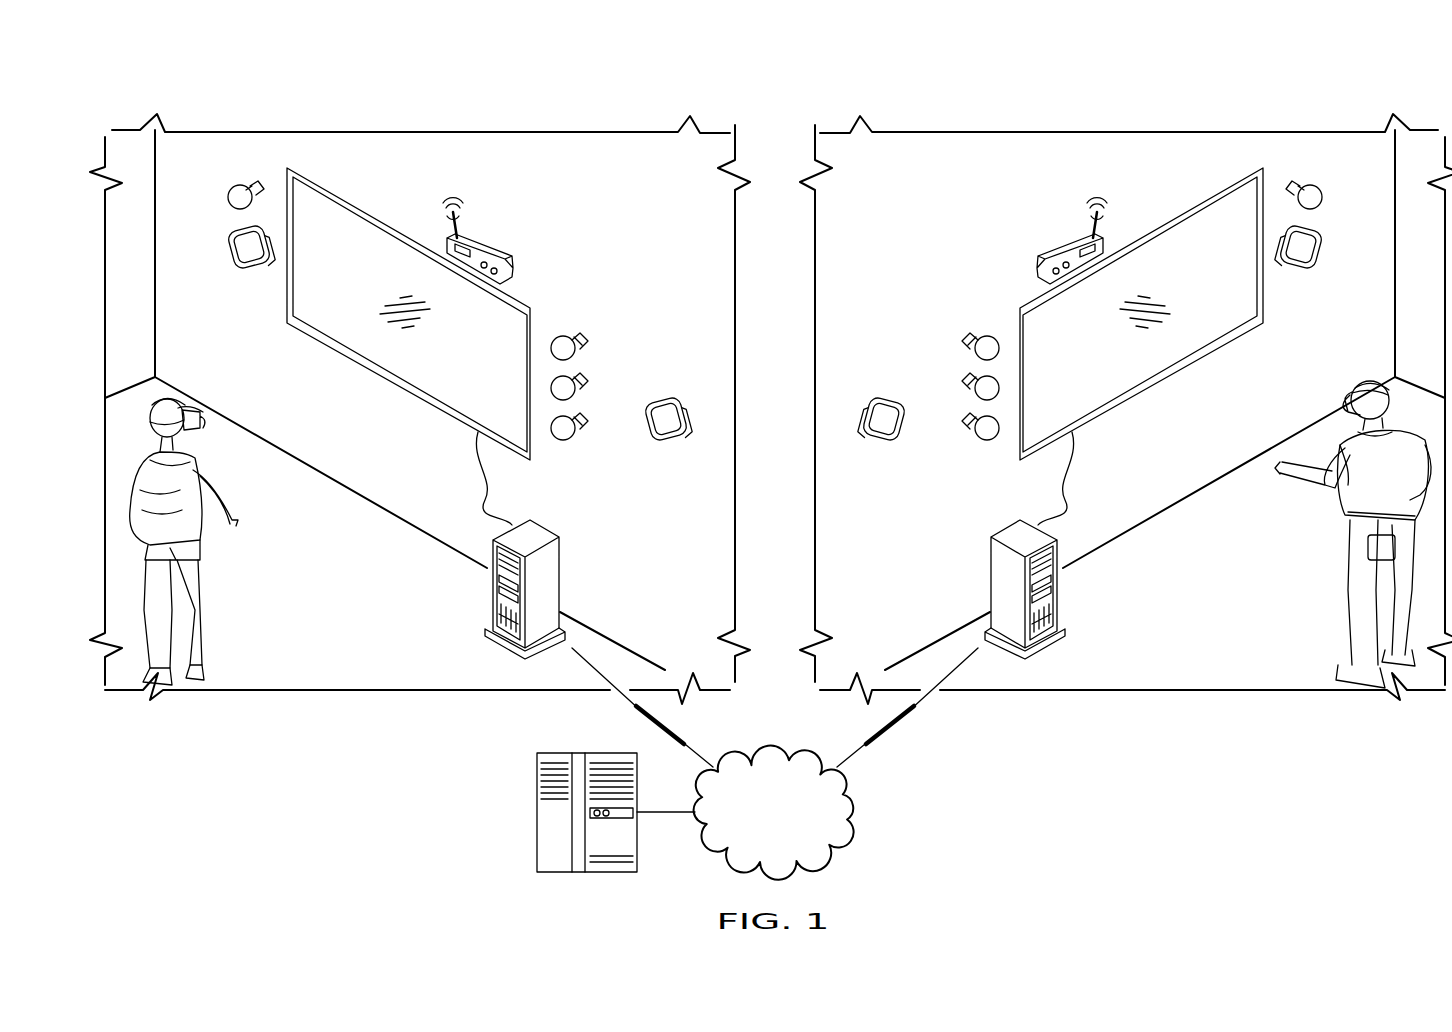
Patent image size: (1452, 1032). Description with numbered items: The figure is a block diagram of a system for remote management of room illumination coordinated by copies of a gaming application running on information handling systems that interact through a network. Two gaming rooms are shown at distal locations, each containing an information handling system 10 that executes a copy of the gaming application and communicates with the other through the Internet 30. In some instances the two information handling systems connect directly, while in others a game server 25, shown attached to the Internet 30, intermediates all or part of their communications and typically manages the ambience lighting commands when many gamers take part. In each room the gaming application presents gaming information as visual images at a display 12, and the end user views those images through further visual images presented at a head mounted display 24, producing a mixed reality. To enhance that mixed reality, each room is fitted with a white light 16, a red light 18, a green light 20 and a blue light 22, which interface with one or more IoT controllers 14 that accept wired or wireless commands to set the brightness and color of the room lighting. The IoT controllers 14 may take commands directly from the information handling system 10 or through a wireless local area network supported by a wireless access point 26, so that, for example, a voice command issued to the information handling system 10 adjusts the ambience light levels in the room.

The information handling system 10 is at (490, 586).
The display 12 is at (1163, 255).
The IoT controller 14 is at (246, 271).
The white light 16 is at (1312, 101).
The red light 18 is at (972, 336).
The green light 20 is at (968, 378).
The blue light 22 is at (587, 418).
The head mounted display 24 is at (215, 424).
The game server 25 is at (537, 823).
The wireless access point 26 is at (1037, 268).
The Internet 30 is at (788, 843).